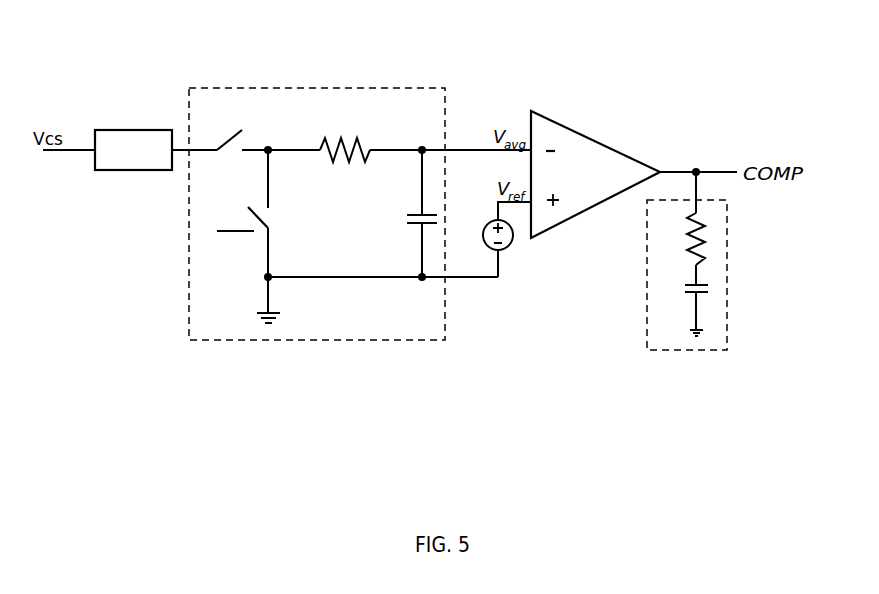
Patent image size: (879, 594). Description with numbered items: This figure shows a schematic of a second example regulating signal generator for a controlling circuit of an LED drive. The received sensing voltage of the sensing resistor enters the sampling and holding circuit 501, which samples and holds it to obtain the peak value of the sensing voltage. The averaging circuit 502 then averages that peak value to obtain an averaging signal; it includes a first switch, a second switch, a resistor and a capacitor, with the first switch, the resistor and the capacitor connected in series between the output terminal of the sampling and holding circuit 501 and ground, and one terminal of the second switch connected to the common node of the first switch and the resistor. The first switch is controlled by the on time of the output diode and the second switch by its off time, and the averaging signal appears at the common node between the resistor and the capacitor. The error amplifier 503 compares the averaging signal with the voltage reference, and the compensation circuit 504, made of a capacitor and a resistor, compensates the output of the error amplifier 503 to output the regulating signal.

The sampling and holding circuit 501 is at (133, 150).
The averaging circuit 502 is at (201, 290).
The error amplifier 503 is at (595, 174).
The compensation circuit 504 is at (660, 340).